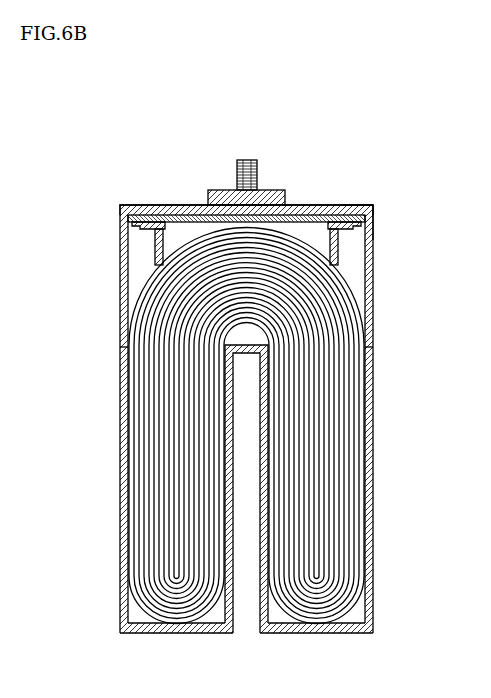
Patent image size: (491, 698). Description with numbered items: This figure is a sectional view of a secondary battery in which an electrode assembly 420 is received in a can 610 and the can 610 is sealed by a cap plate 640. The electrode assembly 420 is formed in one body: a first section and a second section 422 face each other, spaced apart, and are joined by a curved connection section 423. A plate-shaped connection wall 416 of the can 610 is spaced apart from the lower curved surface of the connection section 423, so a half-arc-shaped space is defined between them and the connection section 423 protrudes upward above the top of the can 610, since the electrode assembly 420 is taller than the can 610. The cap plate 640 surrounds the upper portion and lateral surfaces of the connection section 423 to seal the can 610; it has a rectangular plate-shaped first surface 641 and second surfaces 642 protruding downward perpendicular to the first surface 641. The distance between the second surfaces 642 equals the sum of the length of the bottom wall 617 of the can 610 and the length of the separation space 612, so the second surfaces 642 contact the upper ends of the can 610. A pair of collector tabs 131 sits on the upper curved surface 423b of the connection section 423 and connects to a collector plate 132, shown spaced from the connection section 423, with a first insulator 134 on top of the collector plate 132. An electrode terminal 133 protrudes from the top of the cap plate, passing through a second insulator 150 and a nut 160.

The collector tab 131 is at (158, 240).
The collector plate 132 is at (123, 208).
The electrode terminal 133 is at (244, 160).
The first insulator 134 is at (140, 225).
The second insulator 150 is at (295, 206).
The nut 160 is at (268, 190).
The connection wall 416 is at (262, 368).
The electrode assembly 420 is at (292, 425).
The second section 422 is at (268, 310).
The connection section 423 is at (318, 244).
The upper curved surface 423b is at (340, 277).
The can 610 is at (380, 467).
The separation space 612 is at (247, 611).
The bottom wall 617 is at (310, 628).
The cap plate 640 is at (389, 114).
The first surface 641 is at (347, 205).
The second surface 642 is at (403, 188).